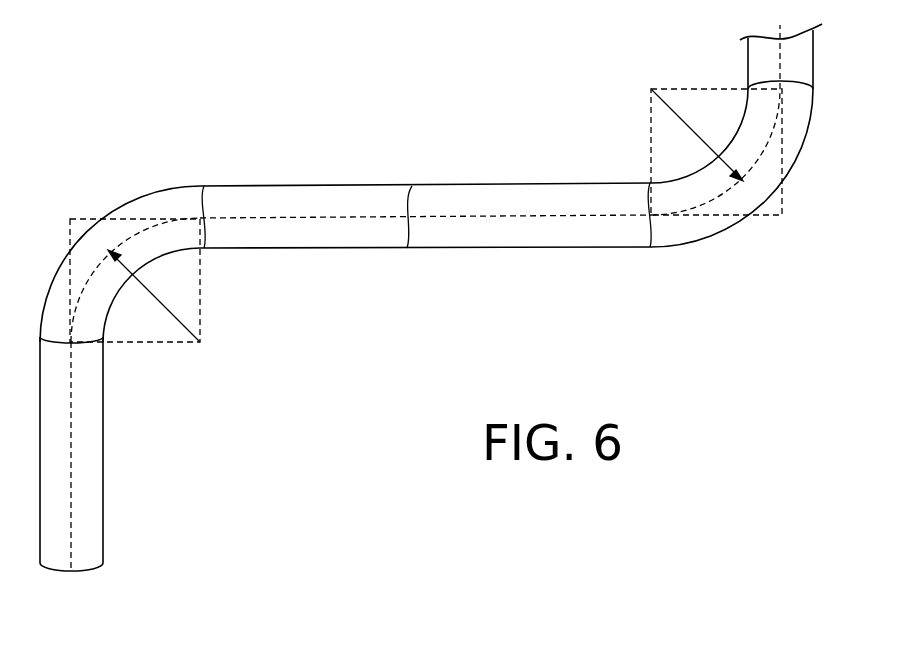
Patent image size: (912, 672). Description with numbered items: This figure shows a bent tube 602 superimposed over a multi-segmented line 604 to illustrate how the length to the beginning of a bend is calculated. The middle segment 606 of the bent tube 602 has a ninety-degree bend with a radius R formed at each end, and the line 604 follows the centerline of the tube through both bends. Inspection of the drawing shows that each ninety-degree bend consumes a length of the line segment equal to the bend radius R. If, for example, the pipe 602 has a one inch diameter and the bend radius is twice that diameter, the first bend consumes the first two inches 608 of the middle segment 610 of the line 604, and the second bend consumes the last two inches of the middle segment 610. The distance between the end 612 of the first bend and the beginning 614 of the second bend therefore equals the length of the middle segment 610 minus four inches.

The bent tube 602 is at (105, 513).
The multi-segmented line 604 is at (72, 458).
The middle segment of the bent tube 606 is at (407, 248).
The first portion of the middle segment consumed by the bend 608 is at (127, 218).
The middle segment of the line 610 is at (412, 186).
The end of the first bend 612 is at (204, 186).
The beginning of the second bend 614 is at (650, 247).